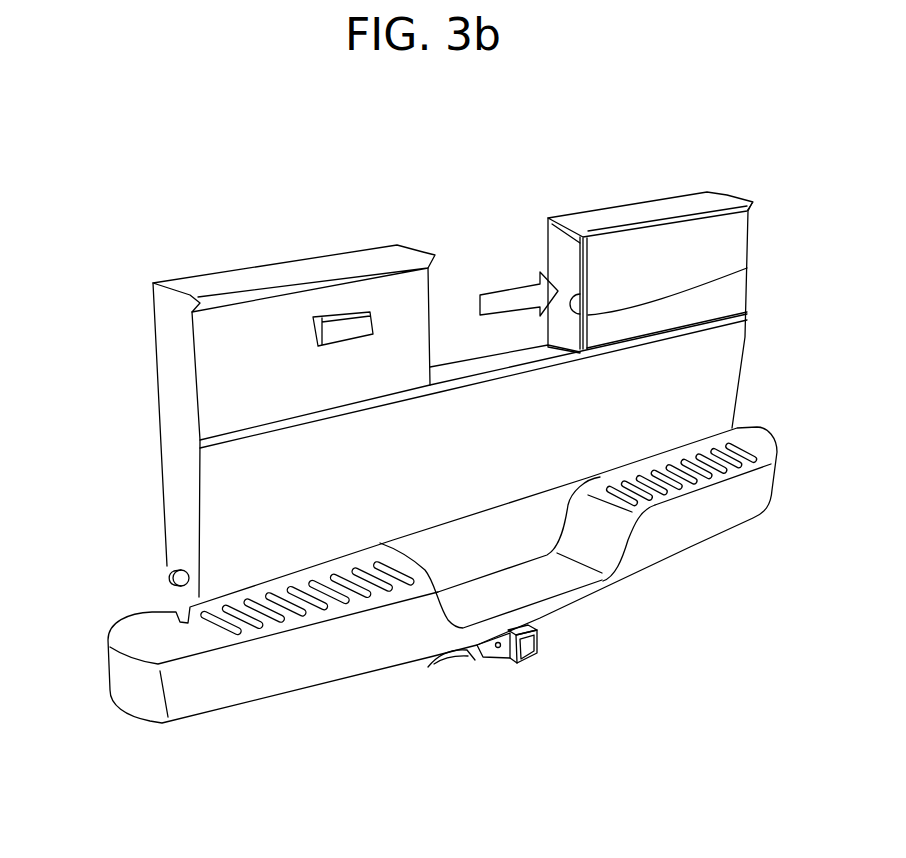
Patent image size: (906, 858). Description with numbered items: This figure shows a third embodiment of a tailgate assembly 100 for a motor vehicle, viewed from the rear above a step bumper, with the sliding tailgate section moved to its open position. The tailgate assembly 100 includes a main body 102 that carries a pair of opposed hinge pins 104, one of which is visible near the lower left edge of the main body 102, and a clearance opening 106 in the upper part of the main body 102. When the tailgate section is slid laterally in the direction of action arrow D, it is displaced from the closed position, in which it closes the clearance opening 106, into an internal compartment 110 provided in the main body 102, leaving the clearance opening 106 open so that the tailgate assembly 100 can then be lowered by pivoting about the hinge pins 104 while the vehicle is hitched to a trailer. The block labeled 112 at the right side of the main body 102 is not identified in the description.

The tailgate assembly 100 is at (287, 213).
The tailgate 102 is at (251, 486).
The tailgate hinge pivot 104 is at (170, 582).
The receiving opening 106 is at (462, 315).
The extension panel 110 is at (748, 268).
The extension module 112 is at (649, 205).
The insertion direction D is at (500, 296).